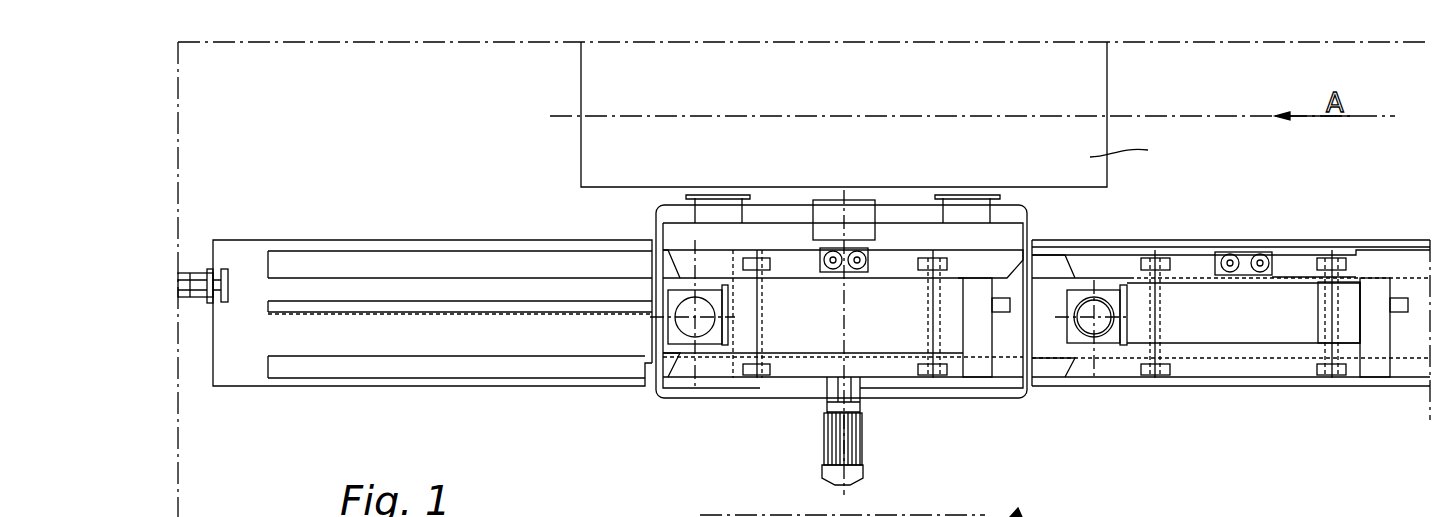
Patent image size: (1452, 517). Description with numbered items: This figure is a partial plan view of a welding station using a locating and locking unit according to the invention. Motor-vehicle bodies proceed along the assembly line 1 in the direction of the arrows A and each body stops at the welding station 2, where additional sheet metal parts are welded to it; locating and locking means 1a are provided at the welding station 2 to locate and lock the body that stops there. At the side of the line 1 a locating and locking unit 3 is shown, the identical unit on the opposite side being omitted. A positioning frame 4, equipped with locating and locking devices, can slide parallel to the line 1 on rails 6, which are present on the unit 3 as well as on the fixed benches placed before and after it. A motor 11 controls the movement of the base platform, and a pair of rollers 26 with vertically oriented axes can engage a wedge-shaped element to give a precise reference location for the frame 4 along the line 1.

The assembly line 1 is at (1207, 116).
The locating and locking means 1a is at (1133, 151).
The welding station 2 is at (1110, 82).
The locating and locking unit 3 is at (823, 315).
The positioning frame 4 is at (879, 500).
The rails 6 is at (345, 265).
The motor 11 is at (810, 342).
The rollers 26 is at (838, 282).